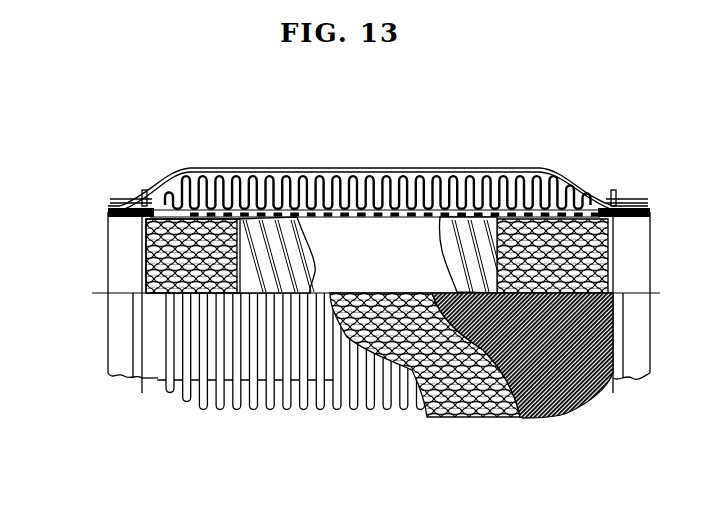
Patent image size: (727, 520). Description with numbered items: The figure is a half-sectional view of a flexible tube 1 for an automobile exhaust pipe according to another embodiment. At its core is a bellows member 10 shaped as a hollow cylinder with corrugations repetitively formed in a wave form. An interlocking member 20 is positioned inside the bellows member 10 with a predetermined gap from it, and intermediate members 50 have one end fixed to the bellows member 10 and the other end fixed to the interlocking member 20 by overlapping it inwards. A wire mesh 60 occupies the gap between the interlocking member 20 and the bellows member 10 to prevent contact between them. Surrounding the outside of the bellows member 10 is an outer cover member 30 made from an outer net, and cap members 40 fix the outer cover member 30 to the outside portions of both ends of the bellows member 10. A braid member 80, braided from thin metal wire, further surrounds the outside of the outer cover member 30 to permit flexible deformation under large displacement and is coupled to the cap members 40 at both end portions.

The flexible tube 1 is at (127, 420).
The bellows member 10 is at (187, 178).
The interlocking member 20 is at (472, 240).
The outer cover member 30 is at (586, 185).
The cap member 40 is at (118, 208).
The intermediate member 50 is at (122, 218).
The wire mesh 60 is at (160, 253).
The braid member 80 is at (551, 417).